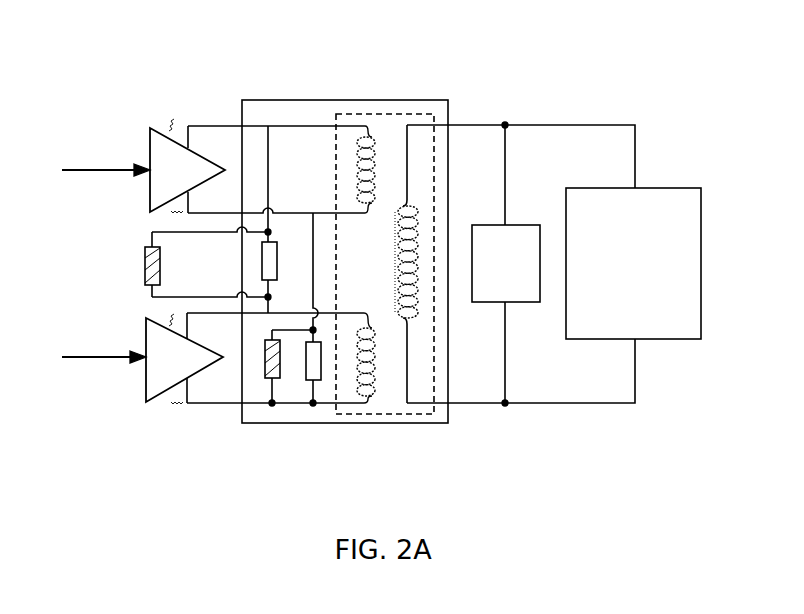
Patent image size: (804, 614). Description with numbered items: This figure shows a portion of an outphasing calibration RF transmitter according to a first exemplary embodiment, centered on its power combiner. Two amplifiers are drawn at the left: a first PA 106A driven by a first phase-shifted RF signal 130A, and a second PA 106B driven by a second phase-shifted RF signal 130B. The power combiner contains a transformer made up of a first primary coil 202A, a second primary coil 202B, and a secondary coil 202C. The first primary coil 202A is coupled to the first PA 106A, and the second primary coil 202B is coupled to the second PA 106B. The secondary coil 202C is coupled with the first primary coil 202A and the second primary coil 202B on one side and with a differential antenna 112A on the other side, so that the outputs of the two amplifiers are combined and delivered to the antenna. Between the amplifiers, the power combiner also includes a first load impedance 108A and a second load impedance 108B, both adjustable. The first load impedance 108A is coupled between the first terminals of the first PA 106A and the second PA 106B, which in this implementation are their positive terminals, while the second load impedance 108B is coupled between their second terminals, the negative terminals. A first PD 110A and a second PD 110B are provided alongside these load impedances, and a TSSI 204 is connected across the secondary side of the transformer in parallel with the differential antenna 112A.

The first power amplifier 106A is at (205, 180).
The second power amplifier 106B is at (203, 369).
The first load impedance 108A is at (260, 253).
The second load impedance 108B is at (305, 373).
The first phase detector 110A is at (143, 257).
The second phase detector 110B is at (262, 342).
The differential antenna 112A is at (607, 305).
The first phase-shifted RF signal 130A is at (100, 170).
The second phase-shifted RF signal 130B is at (112, 357).
The first primary coil 202A is at (373, 140).
The second primary coil 202B is at (358, 407).
The secondary coil 202C is at (413, 215).
The TSSI 204 is at (488, 288).